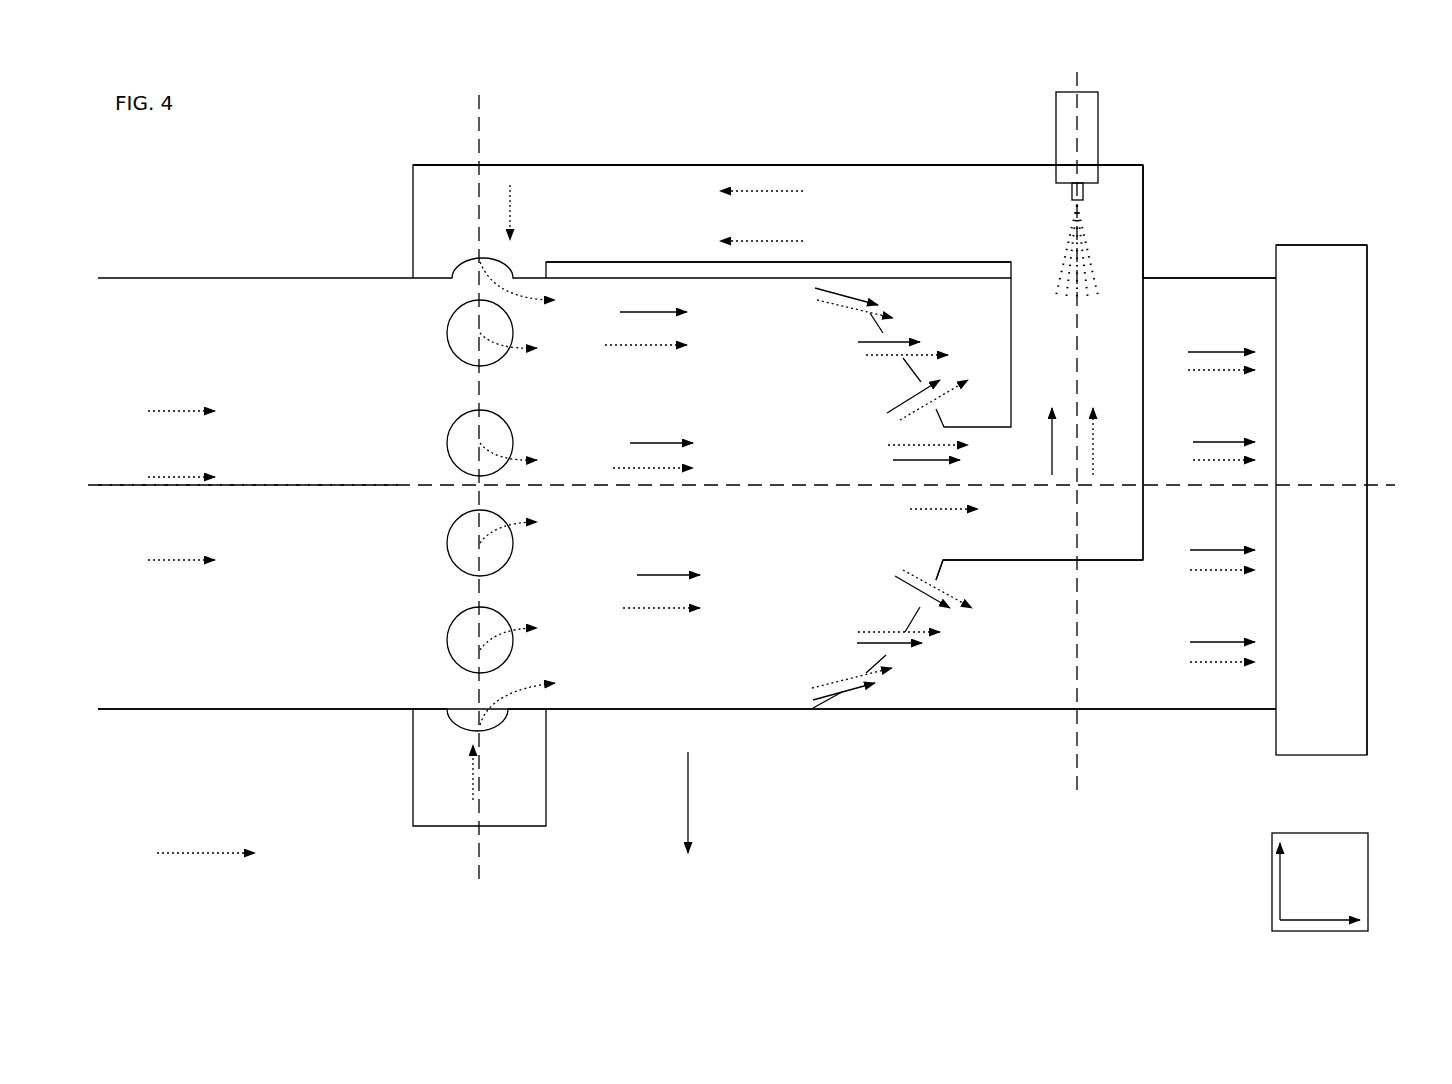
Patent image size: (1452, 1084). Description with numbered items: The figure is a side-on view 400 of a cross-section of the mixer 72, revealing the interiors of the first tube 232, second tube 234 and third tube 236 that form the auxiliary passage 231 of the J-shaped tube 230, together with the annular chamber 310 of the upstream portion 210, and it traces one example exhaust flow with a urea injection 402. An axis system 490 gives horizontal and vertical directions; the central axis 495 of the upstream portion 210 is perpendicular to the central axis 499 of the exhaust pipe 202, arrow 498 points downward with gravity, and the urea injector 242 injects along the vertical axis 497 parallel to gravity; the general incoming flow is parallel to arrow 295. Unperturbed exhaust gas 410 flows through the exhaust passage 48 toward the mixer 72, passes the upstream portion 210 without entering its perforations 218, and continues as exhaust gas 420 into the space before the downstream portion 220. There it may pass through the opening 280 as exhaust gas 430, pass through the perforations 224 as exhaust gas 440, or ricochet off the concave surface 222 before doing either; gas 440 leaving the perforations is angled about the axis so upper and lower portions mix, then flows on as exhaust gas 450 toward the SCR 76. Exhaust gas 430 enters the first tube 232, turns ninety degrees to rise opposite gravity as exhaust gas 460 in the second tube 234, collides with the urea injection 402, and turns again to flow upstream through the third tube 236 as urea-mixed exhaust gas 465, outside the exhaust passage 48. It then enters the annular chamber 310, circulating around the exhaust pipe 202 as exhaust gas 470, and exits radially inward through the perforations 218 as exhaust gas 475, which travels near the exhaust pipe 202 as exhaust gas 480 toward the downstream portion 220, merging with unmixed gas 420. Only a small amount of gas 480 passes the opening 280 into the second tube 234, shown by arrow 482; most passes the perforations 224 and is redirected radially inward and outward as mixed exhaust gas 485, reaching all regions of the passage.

The side-on view 400 is at (1352, 88).
The mixer 72 is at (920, 125).
The J-shaped tube 230 is at (1215, 162).
The third tube 236 is at (768, 165).
The second tube 234 is at (1143, 208).
The urea injector 242 is at (1088, 92).
The urea injection 402 is at (1097, 270).
The exhaust pipe 202 is at (118, 278).
The annular chamber 310 is at (457, 234).
The central axis of the upstream portion 495 is at (483, 152).
The exhaust gas in the annular chamber 470 is at (510, 208).
The exhaust gas in the third tube 465 is at (778, 191).
The perforations of the upstream portion 218 is at (437, 433).
The exhaust gas exiting perforations 475 is at (517, 522).
The exhaust gas flowing toward the mixer 410 is at (167, 411).
The exhaust passage 48 is at (308, 599).
The exhaust gas between the portions 420 is at (650, 312).
The mixed exhaust gas flowing toward the downstream portion 480 is at (652, 468).
The mixed exhaust gas through downstream perforations 485 is at (860, 352).
The mixed exhaust gas entering the second tube 482 is at (890, 445).
The exhaust gas through the opening 430 is at (910, 463).
The downstream portion 220 is at (773, 578).
The perforations of the downstream portion 224 is at (880, 610).
The concave surface 222 is at (872, 668).
The exhaust gas through downstream perforations 440 is at (870, 685).
The opening 280 is at (962, 537).
The upward exhaust gas in the second tube 460 is at (1096, 440).
The exhaust gas downstream of the downstream portion 450 is at (1188, 352).
The auxiliary passage 231 is at (1137, 533).
The first tube 232 is at (1093, 562).
The SCR 76 is at (1336, 511).
The central axis of the exhaust pipe 499 is at (1373, 485).
The vertical axis 497 is at (1077, 772).
The downward direction arrow 498 is at (690, 805).
The upstream portion 210 is at (572, 752).
The incoming exhaust flow direction arrow 295 is at (215, 853).
The axis system 490 is at (1333, 833).